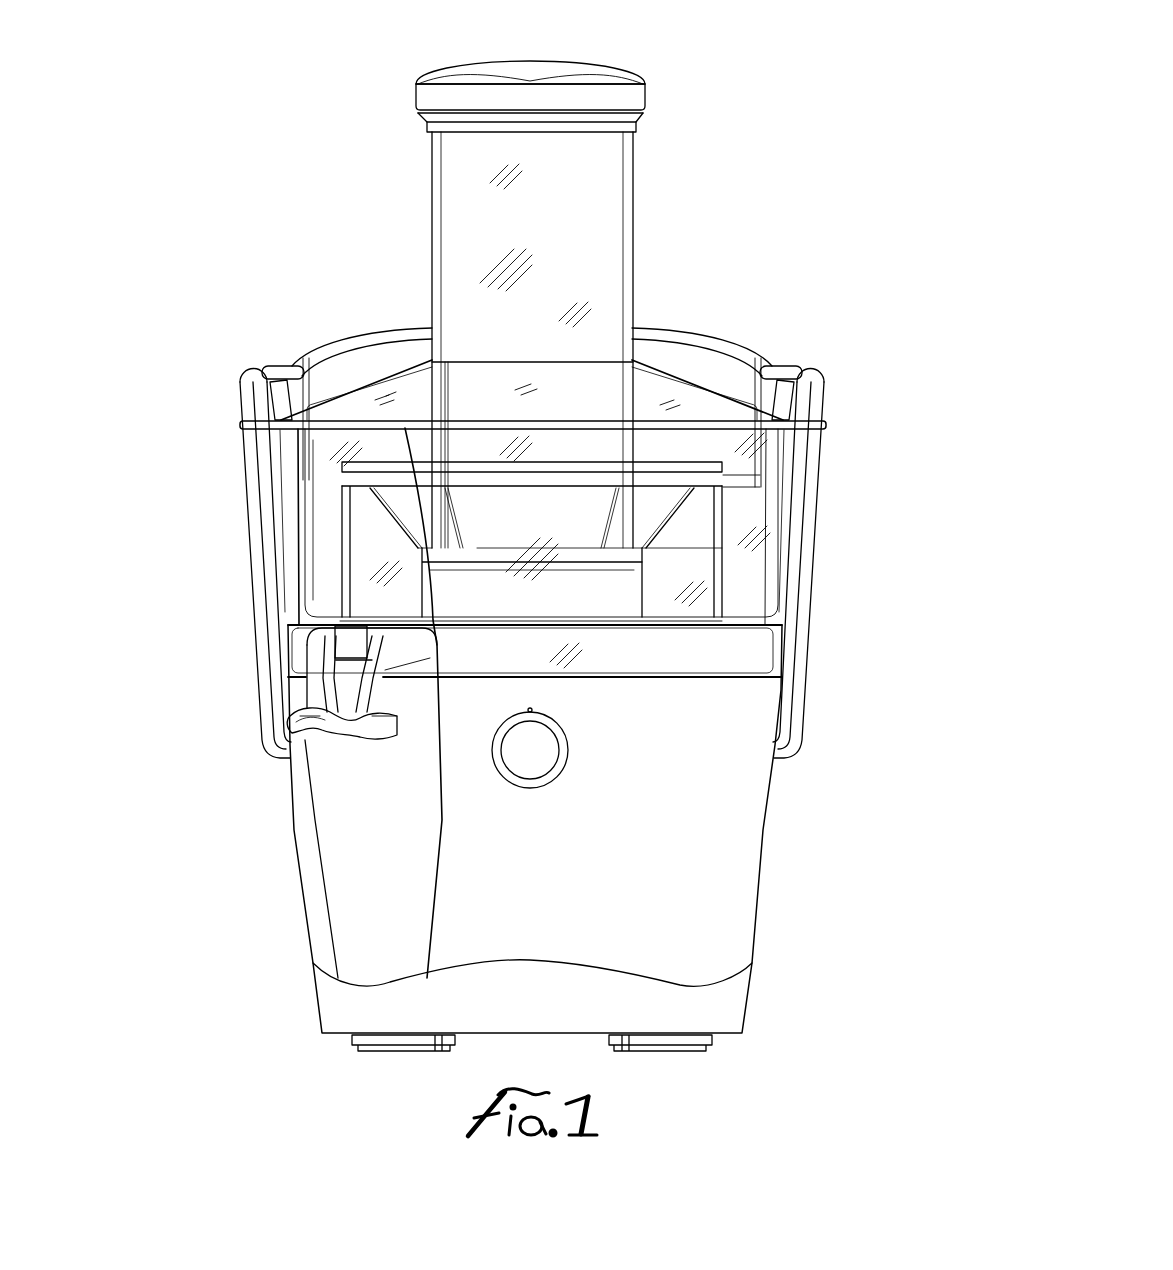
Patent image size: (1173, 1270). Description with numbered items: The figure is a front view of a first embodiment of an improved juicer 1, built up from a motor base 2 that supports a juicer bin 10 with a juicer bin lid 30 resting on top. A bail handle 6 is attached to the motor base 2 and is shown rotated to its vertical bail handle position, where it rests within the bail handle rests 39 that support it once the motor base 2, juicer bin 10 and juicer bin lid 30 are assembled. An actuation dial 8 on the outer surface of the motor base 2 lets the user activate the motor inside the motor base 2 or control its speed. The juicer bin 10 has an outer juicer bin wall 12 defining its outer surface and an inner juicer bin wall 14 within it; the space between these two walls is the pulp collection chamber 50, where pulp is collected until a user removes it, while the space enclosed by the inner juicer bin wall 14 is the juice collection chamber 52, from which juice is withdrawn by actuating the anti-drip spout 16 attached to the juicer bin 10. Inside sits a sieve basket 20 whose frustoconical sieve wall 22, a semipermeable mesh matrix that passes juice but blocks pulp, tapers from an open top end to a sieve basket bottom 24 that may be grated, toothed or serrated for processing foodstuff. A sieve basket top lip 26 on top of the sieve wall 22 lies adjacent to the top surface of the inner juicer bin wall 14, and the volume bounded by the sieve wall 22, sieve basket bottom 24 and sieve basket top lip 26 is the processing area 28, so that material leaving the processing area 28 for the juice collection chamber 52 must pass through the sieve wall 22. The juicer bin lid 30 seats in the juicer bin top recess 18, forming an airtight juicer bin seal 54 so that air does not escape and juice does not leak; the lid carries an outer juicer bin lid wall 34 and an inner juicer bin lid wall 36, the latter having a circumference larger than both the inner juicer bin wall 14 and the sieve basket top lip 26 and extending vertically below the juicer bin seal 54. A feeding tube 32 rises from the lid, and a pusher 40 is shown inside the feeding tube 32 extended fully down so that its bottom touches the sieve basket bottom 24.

The improved juicer 1 is at (373, 215).
The motor base 2 is at (305, 926).
The bail handle 6 is at (797, 742).
The actuation dial 8 is at (575, 773).
The juicer bin 10 is at (283, 629).
The outer juicer bin wall 12 is at (275, 530).
The inner juicer bin wall 14 is at (338, 595).
The spout 16 is at (295, 732).
The juicer bin top recess 18 is at (281, 457).
The sieve basket 20 is at (550, 571).
The sieve wall 22 is at (660, 538).
The sieve basket bottom 24 is at (640, 601).
The sieve basket top lip 26 is at (722, 464).
The processing area 28 is at (540, 516).
The juicer bin lid 30 is at (417, 273).
The feeding tube 32 is at (634, 247).
The outer juicer bin lid wall 34 is at (272, 440).
The inner juicer bin lid wall 36 is at (758, 443).
The bail handle rest 39 is at (277, 378).
The pusher 40 is at (648, 79).
The pulp collection chamber 50 is at (312, 503).
The juice collection chamber 52 is at (367, 566).
The juicer bin seal 54 is at (785, 475).